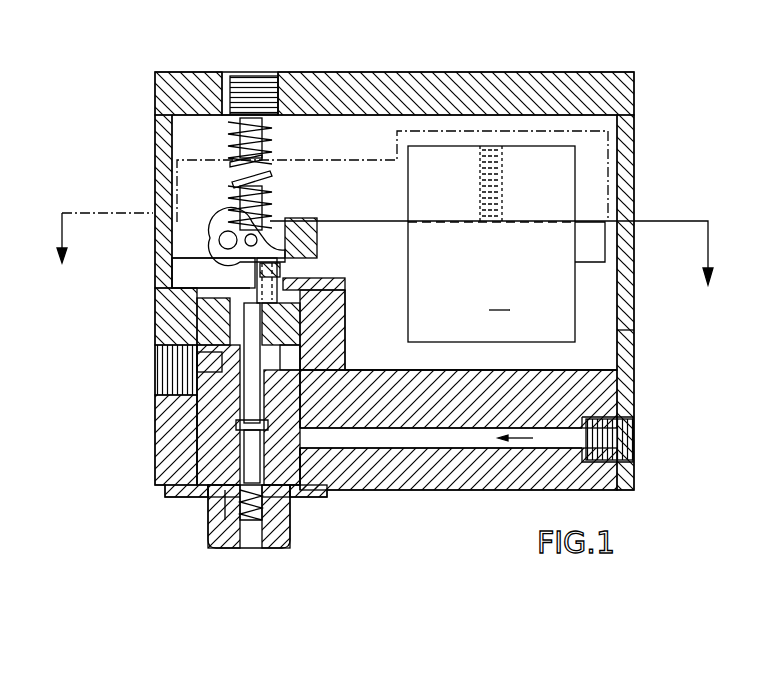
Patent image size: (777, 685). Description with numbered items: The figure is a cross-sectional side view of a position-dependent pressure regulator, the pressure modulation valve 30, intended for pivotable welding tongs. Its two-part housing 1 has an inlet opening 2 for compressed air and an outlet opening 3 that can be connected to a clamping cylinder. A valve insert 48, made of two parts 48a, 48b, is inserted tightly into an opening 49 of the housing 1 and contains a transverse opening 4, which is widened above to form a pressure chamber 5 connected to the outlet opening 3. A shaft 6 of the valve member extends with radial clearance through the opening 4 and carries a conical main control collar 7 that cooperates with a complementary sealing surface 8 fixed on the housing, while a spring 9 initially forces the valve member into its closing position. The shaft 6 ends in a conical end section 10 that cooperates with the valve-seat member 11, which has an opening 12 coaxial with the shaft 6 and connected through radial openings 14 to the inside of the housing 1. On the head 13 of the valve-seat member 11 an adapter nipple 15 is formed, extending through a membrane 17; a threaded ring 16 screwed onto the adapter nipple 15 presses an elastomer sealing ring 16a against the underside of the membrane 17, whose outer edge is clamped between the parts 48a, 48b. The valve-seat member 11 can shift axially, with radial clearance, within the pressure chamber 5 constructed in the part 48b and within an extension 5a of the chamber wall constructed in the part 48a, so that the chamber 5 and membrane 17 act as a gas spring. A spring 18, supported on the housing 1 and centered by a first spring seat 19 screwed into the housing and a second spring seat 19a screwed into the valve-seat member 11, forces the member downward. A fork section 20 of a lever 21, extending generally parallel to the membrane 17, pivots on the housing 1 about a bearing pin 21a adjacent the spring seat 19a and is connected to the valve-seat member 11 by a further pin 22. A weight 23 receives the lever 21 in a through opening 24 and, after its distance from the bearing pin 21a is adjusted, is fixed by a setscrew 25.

The housing 1 is at (477, 490).
The inlet opening 2 is at (620, 446).
The outlet opening 3 is at (162, 396).
The transverse opening 4 is at (320, 480).
The pressure chamber 5 is at (270, 372).
The extension of the pressure-chamber wall 5a is at (252, 290).
The shaft 6 is at (205, 430).
The conical main control collar 7 is at (195, 488).
The sealing surface 8 is at (228, 470).
The spring 9 is at (258, 505).
The conical end section 10 is at (205, 398).
The valve-seat member 11 is at (218, 268).
The opening 12 is at (298, 247).
The head 13 is at (292, 345).
The radial openings 14 is at (322, 274).
The adapter nipple 15 is at (292, 332).
The threaded ring 16 is at (172, 374).
The elastomer sealing ring 16a is at (215, 342).
The membrane 17 is at (233, 327).
The spring 18 is at (230, 160).
The first spring seat 19 is at (270, 92).
The second spring seat 19a is at (232, 176).
The fork section 20 is at (215, 241).
The lever 21 is at (370, 221).
The bearing pin 21a is at (228, 224).
The pin 22 is at (240, 186).
The weight 23 is at (506, 244).
The through opening 24 is at (537, 260).
The setscrew 25 is at (487, 146).
The pressure modulation valve 30 is at (660, 342).
The valve insert 48 is at (225, 512).
The upper part of valve insert 48a is at (300, 287).
The lower part of valve insert 48b is at (368, 367).
The opening 49 is at (293, 497).